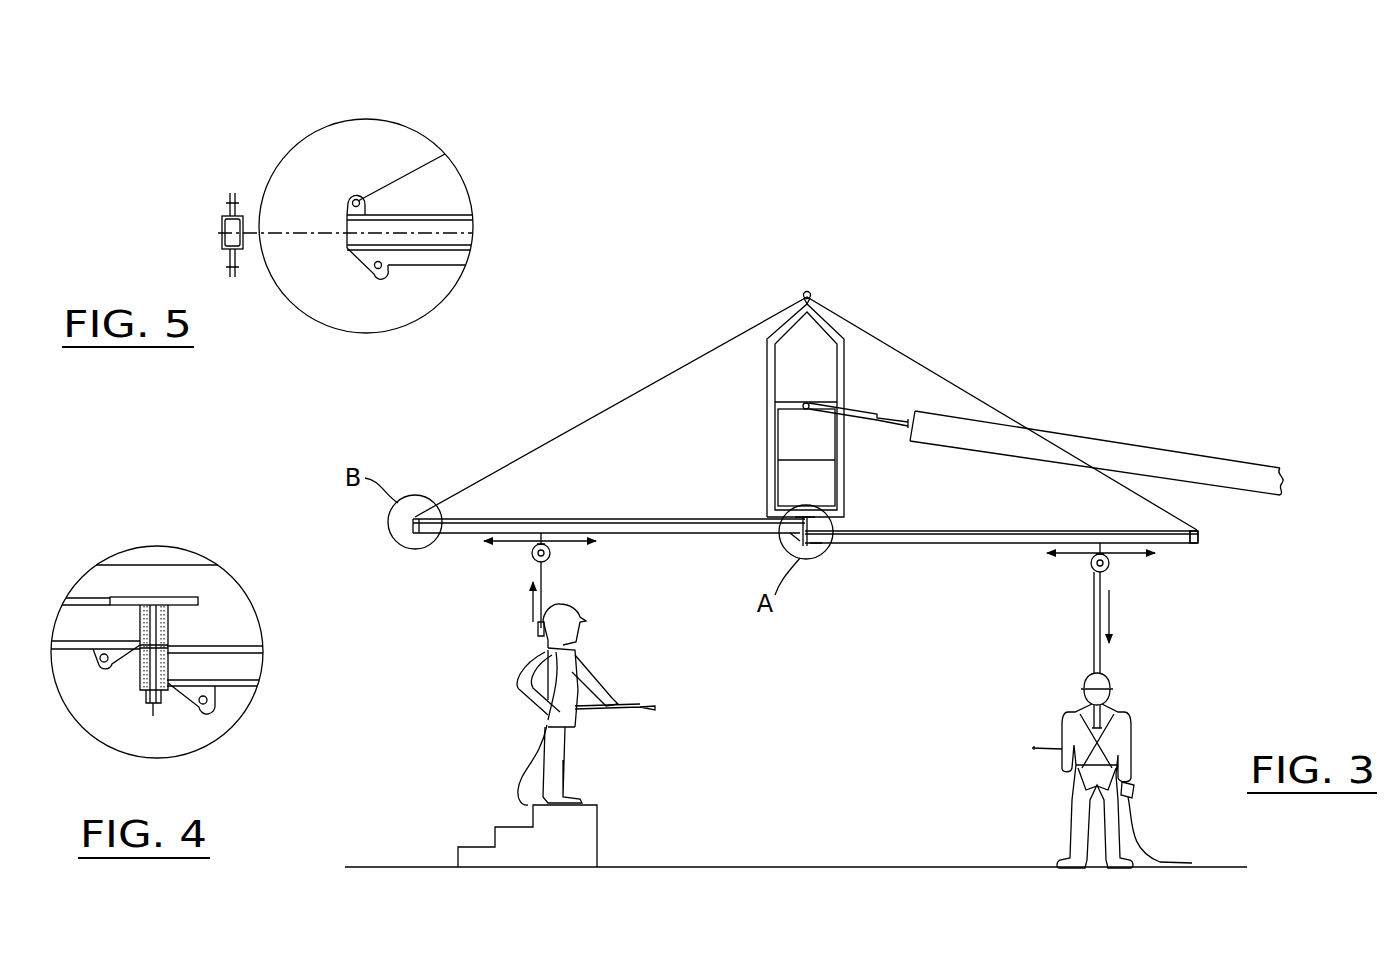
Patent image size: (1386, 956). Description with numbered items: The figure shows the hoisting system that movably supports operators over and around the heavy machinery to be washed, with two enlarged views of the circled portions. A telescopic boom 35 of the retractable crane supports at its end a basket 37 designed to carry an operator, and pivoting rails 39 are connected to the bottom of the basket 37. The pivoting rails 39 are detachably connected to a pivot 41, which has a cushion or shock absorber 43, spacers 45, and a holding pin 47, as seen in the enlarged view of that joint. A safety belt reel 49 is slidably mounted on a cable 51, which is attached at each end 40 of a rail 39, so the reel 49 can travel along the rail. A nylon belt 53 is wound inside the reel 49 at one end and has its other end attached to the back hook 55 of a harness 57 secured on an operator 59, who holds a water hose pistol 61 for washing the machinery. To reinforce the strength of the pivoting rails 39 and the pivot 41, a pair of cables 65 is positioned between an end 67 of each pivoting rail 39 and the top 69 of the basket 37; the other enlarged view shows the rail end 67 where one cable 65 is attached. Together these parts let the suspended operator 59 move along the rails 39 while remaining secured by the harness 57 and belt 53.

In FIG. 3, the telescopic boom 35 is at (967, 419).
In FIG. 3, the basket 37 is at (768, 456).
In FIG. 5, the pivoting rails 39 is at (453, 213).
In FIG. 4, the pivoting rails 39 is at (99, 612).
In FIG. 3, the pivoting rails 39 is at (582, 519).
In FIG. 5, the end of rail 40 is at (360, 272).
In FIG. 3, the end of rail 40 is at (1199, 545).
In FIG. 4, the pivot 41 is at (171, 704).
In FIG. 4, the cushion or shock absorber 43 is at (146, 603).
In FIG. 4, the spacers 45 is at (170, 682).
In FIG. 4, the holding pin 47 is at (146, 704).
In FIG. 3, the safety belt reel 49 is at (551, 560).
In FIG. 5, the cable 51 is at (436, 268).
In FIG. 3, the cable 51 is at (990, 543).
In FIG. 3, the nylon belt 53 is at (1092, 650).
In FIG. 3, the back hook 55 is at (1085, 698).
In FIG. 3, the harness 57 is at (1066, 745).
In FIG. 3, the operator 59 is at (1068, 817).
In FIG. 3, the water hose pistol 61 is at (655, 708).
In FIG. 5, the cables 65 is at (425, 160).
In FIG. 3, the cables 65 is at (678, 367).
In FIG. 5, the end of pivoting rail 67 is at (343, 190).
In FIG. 3, the top of basket 69 is at (809, 291).